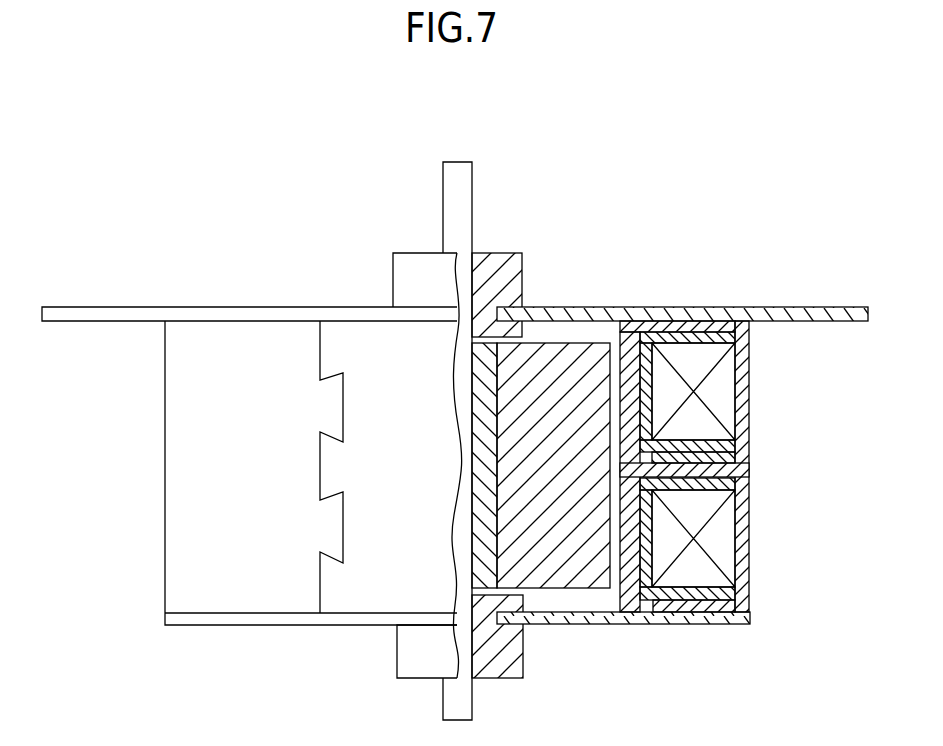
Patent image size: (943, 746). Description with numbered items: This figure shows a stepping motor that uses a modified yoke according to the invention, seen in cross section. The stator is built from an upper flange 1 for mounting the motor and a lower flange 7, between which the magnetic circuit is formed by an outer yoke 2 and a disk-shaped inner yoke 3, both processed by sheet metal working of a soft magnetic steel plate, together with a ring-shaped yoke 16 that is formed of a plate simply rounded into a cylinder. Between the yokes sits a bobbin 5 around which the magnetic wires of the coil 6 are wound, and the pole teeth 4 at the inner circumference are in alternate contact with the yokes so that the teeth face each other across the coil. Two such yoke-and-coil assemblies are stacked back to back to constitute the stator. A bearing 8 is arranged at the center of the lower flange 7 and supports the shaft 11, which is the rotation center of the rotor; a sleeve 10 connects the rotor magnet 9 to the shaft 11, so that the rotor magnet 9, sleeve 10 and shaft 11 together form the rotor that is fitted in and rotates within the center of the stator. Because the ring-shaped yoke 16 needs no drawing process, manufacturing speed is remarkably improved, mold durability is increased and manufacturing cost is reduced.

The upper flange 1 is at (780, 312).
The outer yoke 2 is at (668, 320).
The inner yoke 3 is at (723, 457).
The pole teeth 4 is at (585, 318).
The bobbin 5 is at (703, 343).
The coil 6 is at (690, 422).
The lower flange 7 is at (665, 622).
The bearing 8 is at (418, 275).
The rotor magnet 9 is at (580, 523).
The sleeve 10 is at (495, 517).
The shaft 11 is at (460, 192).
The ring-shaped yoke 16 is at (745, 560).